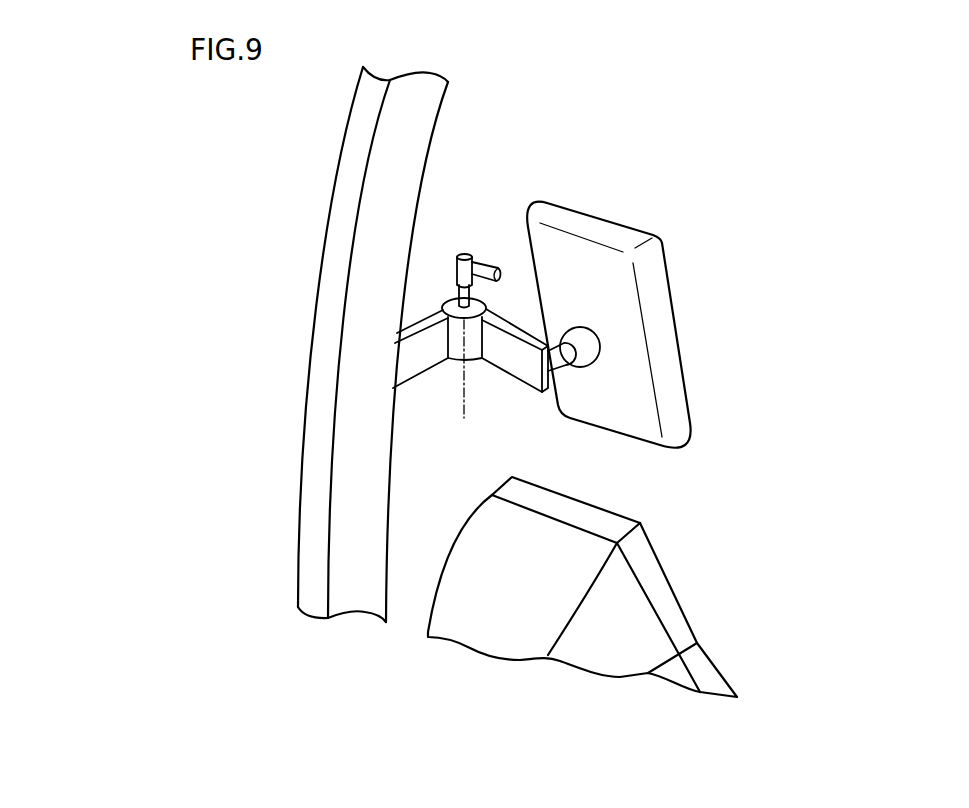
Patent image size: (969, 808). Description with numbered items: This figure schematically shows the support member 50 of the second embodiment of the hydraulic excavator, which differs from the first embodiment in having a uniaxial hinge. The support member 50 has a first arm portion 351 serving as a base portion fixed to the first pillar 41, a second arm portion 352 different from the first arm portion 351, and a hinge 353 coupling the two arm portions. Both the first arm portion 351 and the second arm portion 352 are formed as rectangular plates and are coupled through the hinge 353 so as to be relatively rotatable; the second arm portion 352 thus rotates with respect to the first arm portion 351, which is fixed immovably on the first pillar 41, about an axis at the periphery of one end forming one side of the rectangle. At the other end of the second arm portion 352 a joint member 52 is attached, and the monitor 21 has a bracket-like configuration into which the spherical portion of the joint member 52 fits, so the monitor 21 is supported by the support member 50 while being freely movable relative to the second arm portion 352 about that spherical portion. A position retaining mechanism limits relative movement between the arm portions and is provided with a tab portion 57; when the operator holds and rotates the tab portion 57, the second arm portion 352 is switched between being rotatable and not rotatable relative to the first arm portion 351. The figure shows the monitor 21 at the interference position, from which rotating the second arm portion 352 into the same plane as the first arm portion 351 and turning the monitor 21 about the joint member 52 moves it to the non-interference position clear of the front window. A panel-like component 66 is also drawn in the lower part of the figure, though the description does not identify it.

The monitor 21 is at (615, 212).
The first pillar 41 is at (372, 275).
The support member 50 is at (501, 319).
The joint member 52 is at (583, 373).
The tab portion 57 is at (463, 254).
The instrument panel 66 is at (677, 567).
The first arm portion 351 is at (408, 355).
The second arm portion 352 is at (518, 357).
The hinge 353 is at (455, 345).